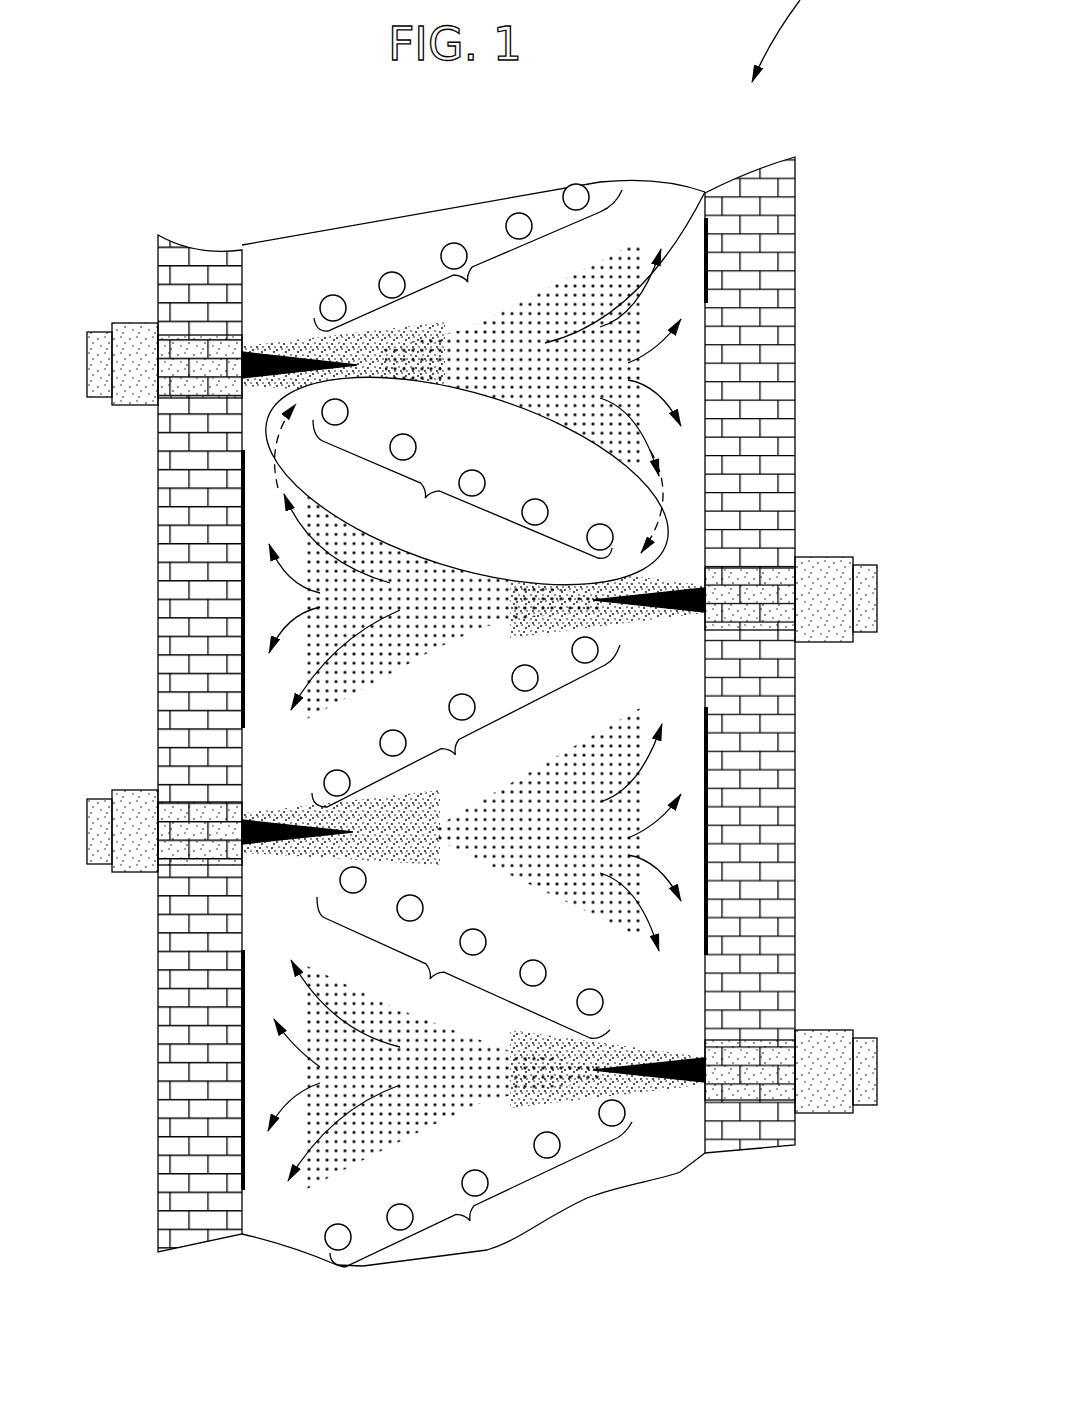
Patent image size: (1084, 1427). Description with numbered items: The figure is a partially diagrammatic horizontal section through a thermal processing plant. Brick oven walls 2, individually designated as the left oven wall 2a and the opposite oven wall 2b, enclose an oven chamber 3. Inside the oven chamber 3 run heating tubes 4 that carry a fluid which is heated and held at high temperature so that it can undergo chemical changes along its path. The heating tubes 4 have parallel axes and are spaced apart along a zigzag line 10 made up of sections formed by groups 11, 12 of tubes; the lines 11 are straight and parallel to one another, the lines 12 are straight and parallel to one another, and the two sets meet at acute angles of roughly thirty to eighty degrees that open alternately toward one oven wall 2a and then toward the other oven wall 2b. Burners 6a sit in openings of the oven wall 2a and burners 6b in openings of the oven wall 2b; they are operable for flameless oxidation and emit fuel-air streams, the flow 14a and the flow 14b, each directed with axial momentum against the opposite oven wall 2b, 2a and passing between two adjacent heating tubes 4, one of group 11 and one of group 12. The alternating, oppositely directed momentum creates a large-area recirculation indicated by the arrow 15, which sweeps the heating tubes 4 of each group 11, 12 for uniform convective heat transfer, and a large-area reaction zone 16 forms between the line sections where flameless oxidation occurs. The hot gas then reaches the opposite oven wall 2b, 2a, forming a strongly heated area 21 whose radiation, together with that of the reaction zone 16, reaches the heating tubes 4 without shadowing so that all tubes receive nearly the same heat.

The oven walls 2 is at (504, 641).
The oven wall 2a is at (204, 258).
The oven wall 2b is at (735, 188).
The oven chamber 3 is at (646, 228).
The heating tubes 4 is at (576, 184).
The burners 6a is at (128, 318).
The burners 6b is at (836, 546).
The line 10 is at (656, 135).
The group of heating tubes 11 is at (472, 728).
The group of heating tubes 12 is at (462, 729).
The flow 14a is at (254, 345).
The flow 14b is at (675, 627).
The recirculation flow 15 is at (290, 522).
The reaction zone 16 is at (705, 192).
The strongly heated area 21 is at (243, 592).